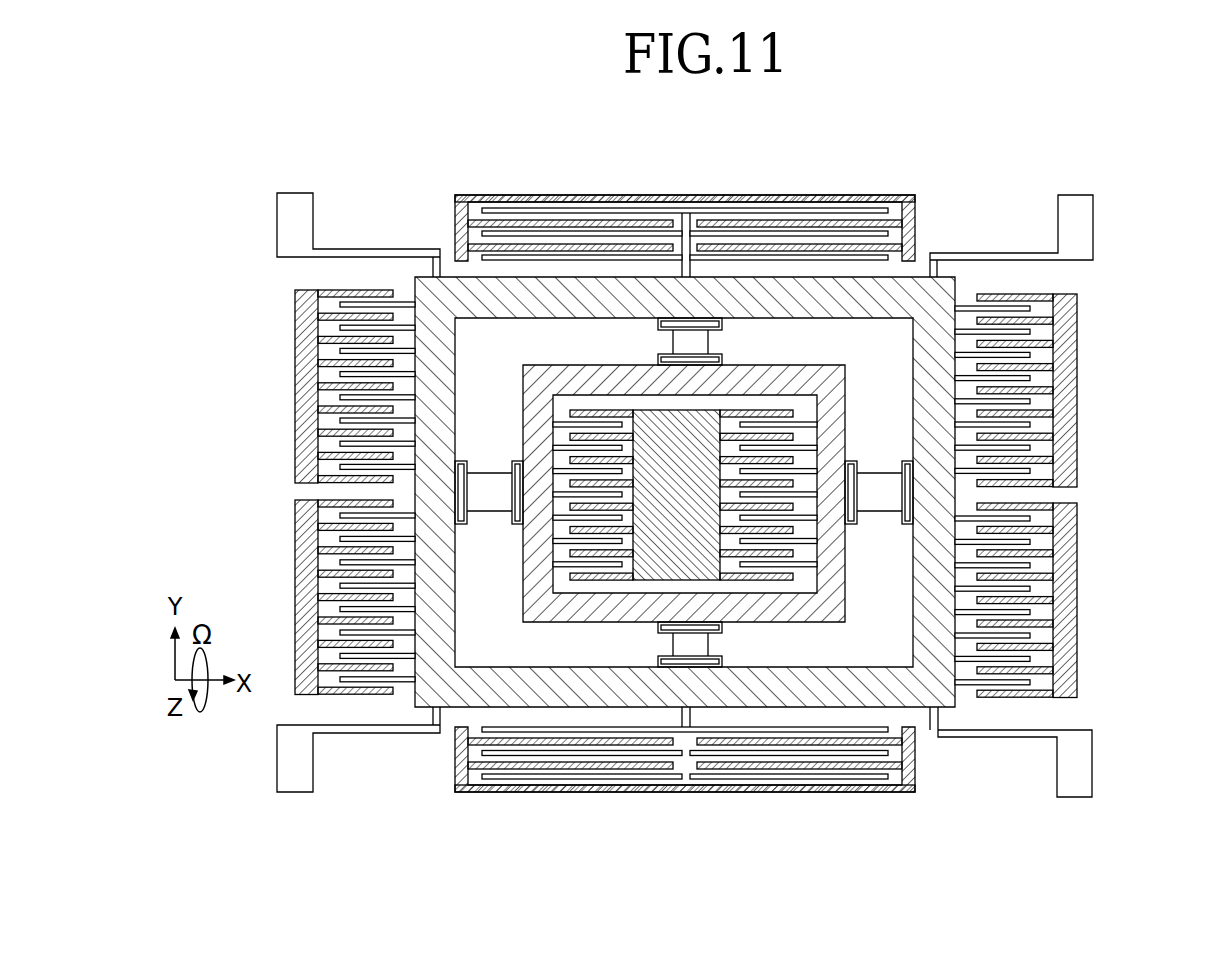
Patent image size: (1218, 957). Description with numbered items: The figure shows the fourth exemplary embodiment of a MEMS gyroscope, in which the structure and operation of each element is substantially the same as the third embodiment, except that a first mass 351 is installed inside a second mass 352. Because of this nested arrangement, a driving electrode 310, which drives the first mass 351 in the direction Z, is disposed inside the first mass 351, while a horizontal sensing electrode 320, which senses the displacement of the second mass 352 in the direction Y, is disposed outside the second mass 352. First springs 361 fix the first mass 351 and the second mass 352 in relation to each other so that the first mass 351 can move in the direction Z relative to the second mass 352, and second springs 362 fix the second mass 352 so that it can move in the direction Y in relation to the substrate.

The driving electrode 310 is at (707, 430).
The horizontal sensing electrode 320 is at (518, 215).
The first mass 351 is at (745, 375).
The second mass 352 is at (862, 297).
The first springs 361 is at (490, 488).
The second springs 362 is at (1003, 260).